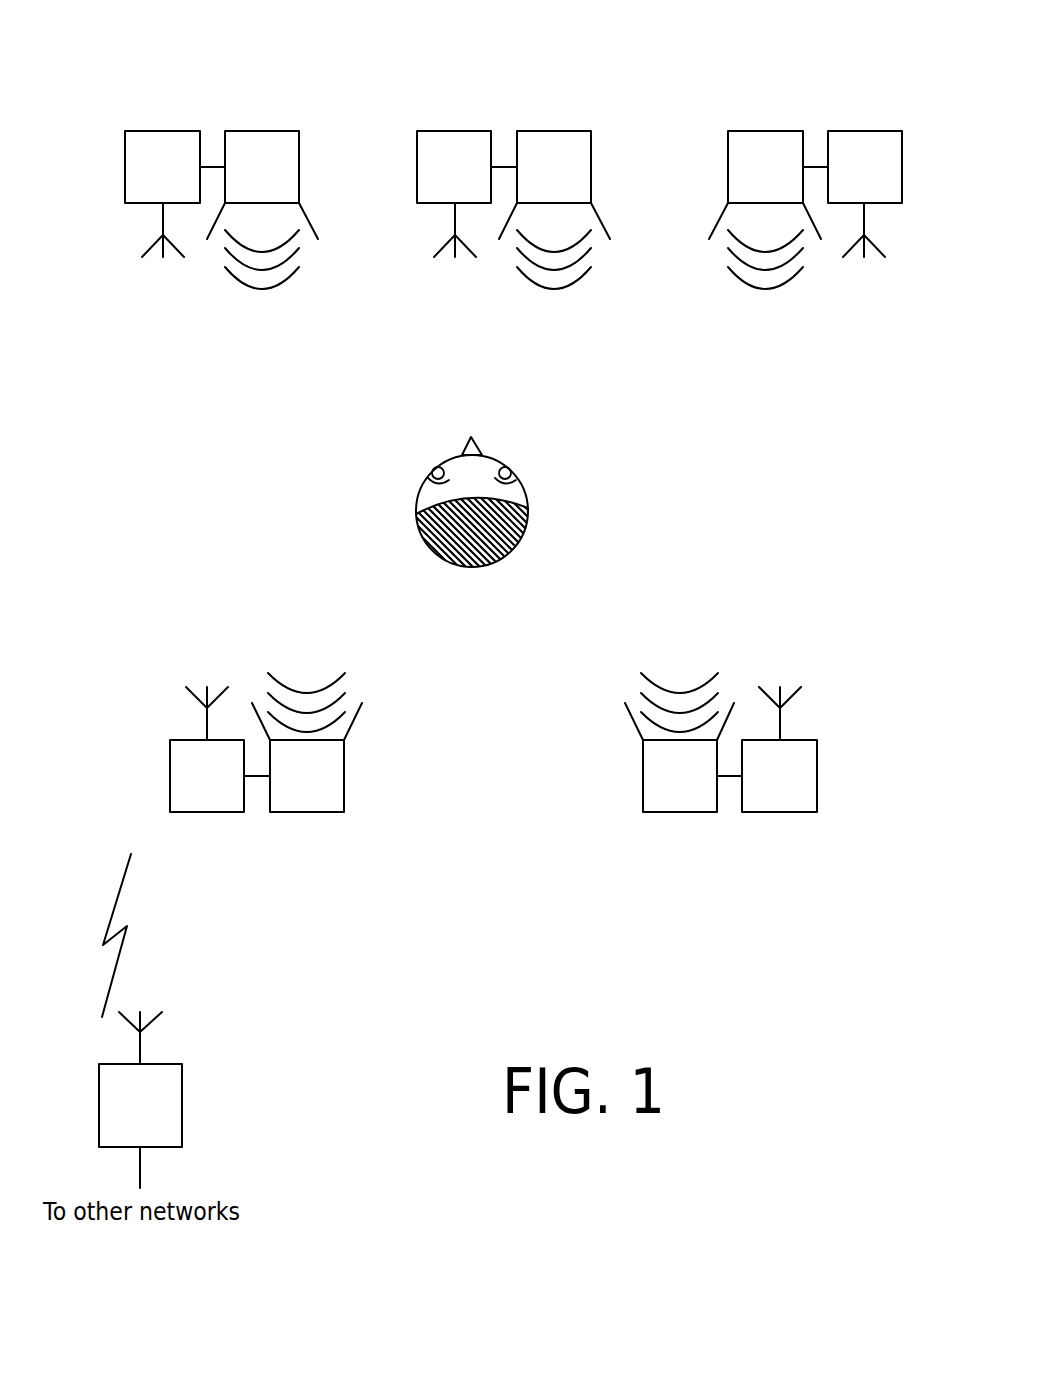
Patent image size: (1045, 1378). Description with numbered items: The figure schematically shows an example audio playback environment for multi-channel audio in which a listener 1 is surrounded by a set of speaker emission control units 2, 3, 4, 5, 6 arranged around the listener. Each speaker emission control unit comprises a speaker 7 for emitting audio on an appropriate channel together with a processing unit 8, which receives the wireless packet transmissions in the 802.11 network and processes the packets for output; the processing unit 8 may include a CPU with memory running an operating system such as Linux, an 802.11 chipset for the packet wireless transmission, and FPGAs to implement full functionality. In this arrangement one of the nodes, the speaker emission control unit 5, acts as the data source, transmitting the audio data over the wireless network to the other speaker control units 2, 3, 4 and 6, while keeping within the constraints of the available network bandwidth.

The listener 1 is at (527, 509).
The speaker emission control unit 2 is at (208, 152).
The speaker emission control unit 3 is at (565, 73).
The speaker emission control unit 4 is at (872, 73).
The speaker emission control unit 5 is at (254, 877).
The speaker emission control unit 6 is at (735, 877).
The speaker 7 is at (299, 167).
The processing unit 8 is at (125, 167).